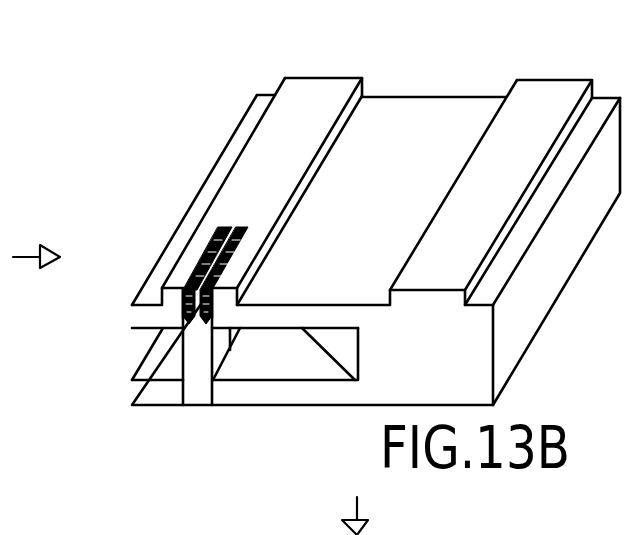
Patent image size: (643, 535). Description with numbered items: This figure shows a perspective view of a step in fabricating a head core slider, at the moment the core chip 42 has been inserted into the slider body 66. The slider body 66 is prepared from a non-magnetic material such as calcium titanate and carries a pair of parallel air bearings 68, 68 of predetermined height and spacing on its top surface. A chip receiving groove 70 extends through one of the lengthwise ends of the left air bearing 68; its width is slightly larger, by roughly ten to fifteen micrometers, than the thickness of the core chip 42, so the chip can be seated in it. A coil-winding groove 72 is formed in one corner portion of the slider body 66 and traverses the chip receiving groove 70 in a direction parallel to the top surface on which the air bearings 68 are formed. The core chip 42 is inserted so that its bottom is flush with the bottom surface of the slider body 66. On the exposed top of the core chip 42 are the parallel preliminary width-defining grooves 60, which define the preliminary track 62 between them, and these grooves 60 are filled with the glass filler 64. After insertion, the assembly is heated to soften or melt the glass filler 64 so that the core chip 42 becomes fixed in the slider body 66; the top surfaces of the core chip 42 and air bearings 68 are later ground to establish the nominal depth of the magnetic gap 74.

The slider body 66 is at (230, 100).
The air bearing 68 is at (320, 95).
The preliminary track 62 is at (222, 232).
The magnetic gap 74 is at (207, 232).
The glass filler 64 is at (192, 262).
The chip receiving groove 70 is at (240, 240).
The preliminary width-defining groove 60 is at (183, 307).
The core chip 42 is at (165, 355).
The coil-winding groove 72 is at (290, 357).